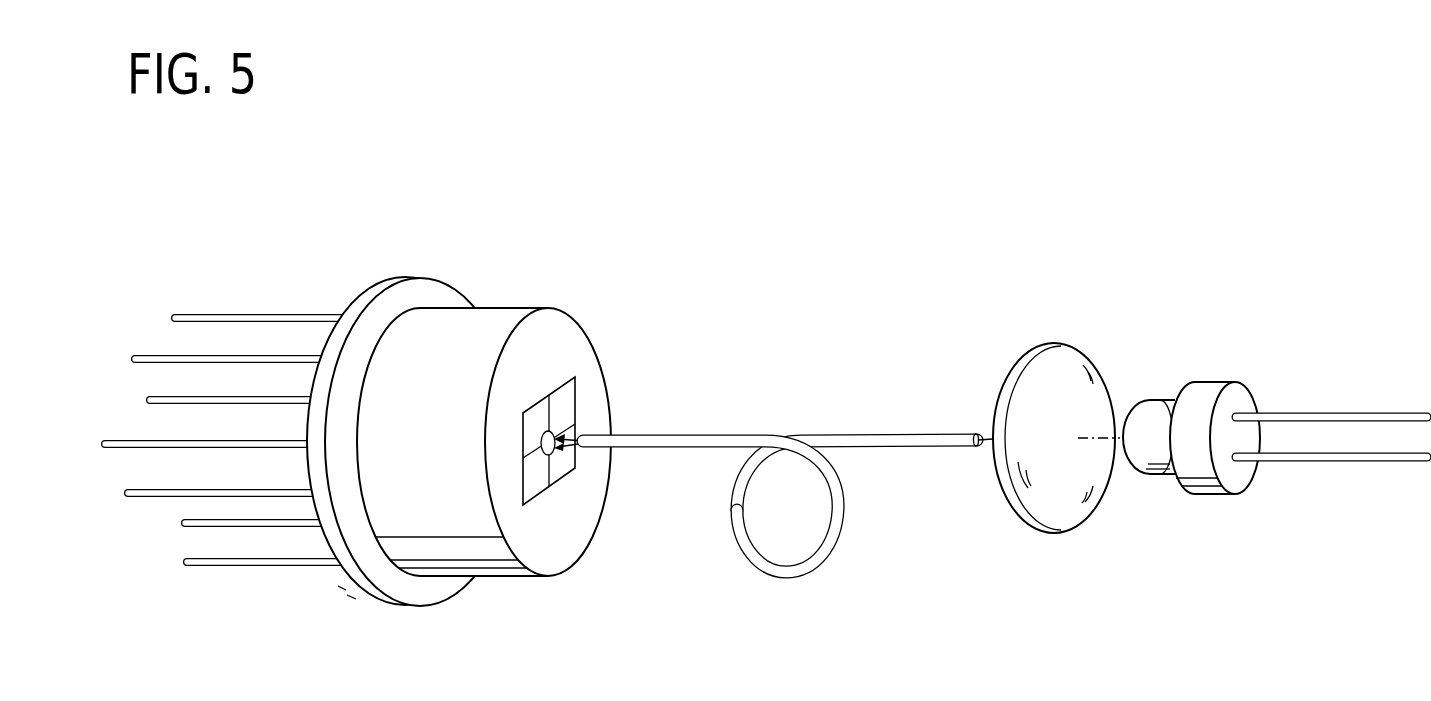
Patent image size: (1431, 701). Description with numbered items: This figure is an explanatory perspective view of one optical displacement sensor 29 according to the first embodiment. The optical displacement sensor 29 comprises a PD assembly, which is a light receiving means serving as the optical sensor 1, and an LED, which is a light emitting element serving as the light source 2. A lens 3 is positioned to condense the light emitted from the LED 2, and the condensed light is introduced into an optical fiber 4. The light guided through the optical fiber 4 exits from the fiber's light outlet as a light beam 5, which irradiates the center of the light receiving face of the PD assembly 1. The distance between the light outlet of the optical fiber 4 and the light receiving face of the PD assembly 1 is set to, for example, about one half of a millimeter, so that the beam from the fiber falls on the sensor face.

The optical sensor (PD assembly) 1 is at (503, 315).
The light source (LED) 2 is at (1208, 385).
The lens 3 is at (1058, 360).
The optical fiber 4 is at (827, 535).
The light beam 5 is at (556, 436).
The optical displacement sensor 29 is at (972, 262).